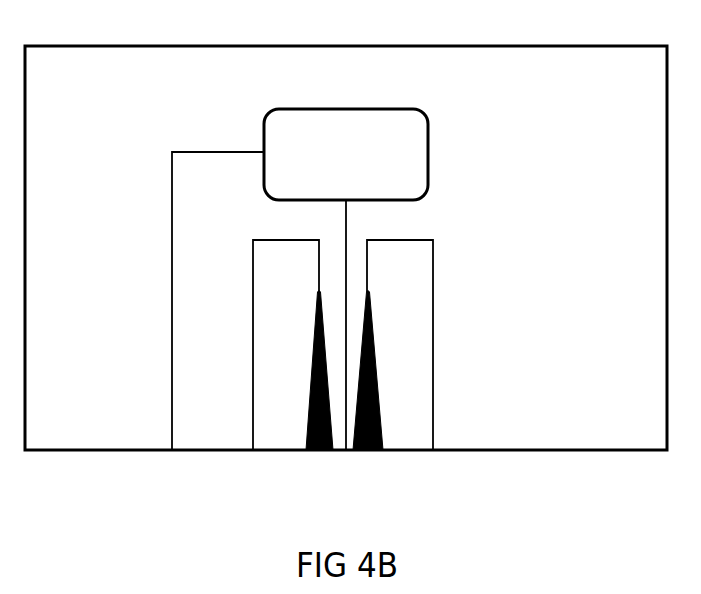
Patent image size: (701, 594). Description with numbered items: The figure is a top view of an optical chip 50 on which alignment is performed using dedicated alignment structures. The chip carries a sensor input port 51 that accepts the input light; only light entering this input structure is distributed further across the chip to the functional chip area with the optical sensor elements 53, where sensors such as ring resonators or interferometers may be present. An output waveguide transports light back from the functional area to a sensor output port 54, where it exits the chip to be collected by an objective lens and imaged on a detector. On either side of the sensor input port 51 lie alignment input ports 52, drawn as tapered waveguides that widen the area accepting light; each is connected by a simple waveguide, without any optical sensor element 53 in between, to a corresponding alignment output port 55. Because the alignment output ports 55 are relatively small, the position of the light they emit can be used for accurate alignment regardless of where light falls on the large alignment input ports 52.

The optical chip 50 is at (625, 82).
The sensor input port 51 is at (330, 487).
The alignment input port 52 is at (293, 487).
The optical sensor element 53 is at (361, 168).
The sensor output port 54 is at (155, 487).
The alignment output port 55 is at (240, 487).